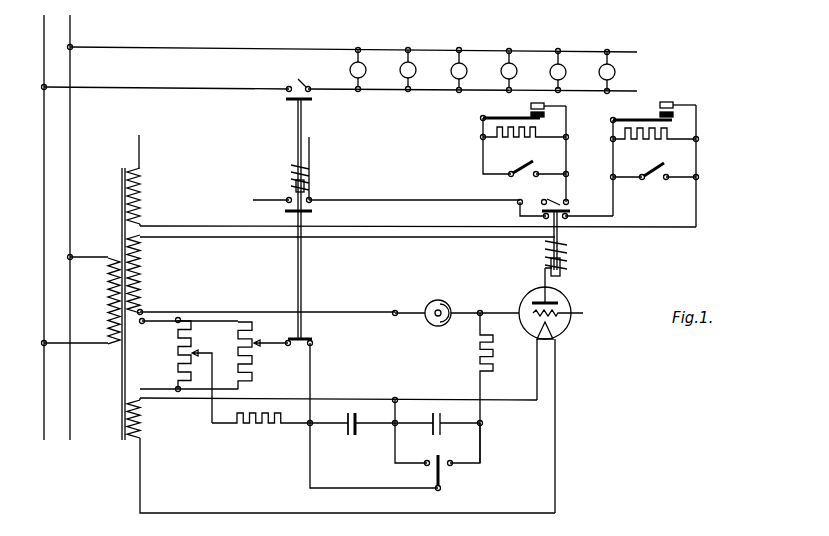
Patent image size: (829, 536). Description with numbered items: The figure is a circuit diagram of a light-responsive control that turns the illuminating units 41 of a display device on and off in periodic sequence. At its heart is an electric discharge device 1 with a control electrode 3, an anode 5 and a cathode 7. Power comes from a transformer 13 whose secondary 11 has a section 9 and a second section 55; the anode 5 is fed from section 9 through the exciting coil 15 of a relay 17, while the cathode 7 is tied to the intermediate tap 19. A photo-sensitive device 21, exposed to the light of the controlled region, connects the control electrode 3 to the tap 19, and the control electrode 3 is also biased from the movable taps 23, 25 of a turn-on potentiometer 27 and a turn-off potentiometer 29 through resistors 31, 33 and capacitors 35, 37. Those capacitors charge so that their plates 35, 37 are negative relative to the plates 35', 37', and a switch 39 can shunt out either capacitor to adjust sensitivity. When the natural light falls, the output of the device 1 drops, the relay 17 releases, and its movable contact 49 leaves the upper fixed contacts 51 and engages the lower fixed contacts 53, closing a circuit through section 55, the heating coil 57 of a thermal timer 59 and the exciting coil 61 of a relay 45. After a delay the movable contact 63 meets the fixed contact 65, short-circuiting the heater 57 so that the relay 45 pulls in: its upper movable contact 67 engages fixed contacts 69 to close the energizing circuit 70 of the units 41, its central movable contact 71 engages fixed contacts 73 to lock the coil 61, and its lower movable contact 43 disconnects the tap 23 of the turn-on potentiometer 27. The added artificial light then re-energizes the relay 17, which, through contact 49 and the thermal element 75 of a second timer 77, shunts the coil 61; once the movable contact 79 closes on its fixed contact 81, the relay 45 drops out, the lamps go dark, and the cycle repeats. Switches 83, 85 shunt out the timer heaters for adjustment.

The electric discharge device 1 is at (562, 298).
The control electrode 3 is at (565, 315).
The anode 5 is at (534, 301).
The cathode 7 is at (535, 334).
The section of the secondary 9 is at (142, 278).
The secondary 11 is at (165, 217).
The transformer 13 is at (106, 227).
The exciting coil 15 is at (566, 252).
The relay 17 is at (529, 261).
The intermediate tap 19 is at (143, 310).
The photo-sensitive device 21 is at (440, 298).
The movable tap 23 is at (258, 342).
The movable tap 25 is at (200, 351).
The turn-on potentiometer 27 is at (253, 367).
The turn-off potentiometer 29 is at (178, 356).
The resistor 31 is at (479, 353).
The resistor 33 is at (270, 428).
The capacitor 35 is at (439, 430).
The capacitor plate 35' is at (418, 416).
The capacitor 37 is at (354, 417).
The capacitor plate 37' is at (339, 437).
The switch 39 is at (441, 472).
The illuminating units 41 is at (387, 78).
The movable contact 43 is at (313, 340).
The relay 45 is at (273, 181).
The movable contact 49 is at (569, 211).
The upper fixed contacts 51 is at (551, 198).
The lower fixed contacts 53 is at (542, 218).
The section of the secondary 55 is at (142, 196).
The heating coil 57 is at (655, 142).
The thermal timer 59 is at (718, 128).
The exciting coil 61 is at (306, 171).
The movable contact 63 is at (660, 114).
The fixed contact 65 is at (670, 103).
The upper movable contact 67 is at (312, 100).
The fixed contacts 69 is at (303, 74).
The energizing circuit 70 is at (196, 77).
The central movable contact 71 is at (313, 211).
The fixed contacts 73 is at (289, 198).
The thermal element 75 is at (526, 140).
The second timer 77 is at (468, 127).
The movable contact 79 is at (530, 110).
The fixed contact 81 is at (548, 116).
The switch 83 is at (652, 168).
The switch 85 is at (518, 170).